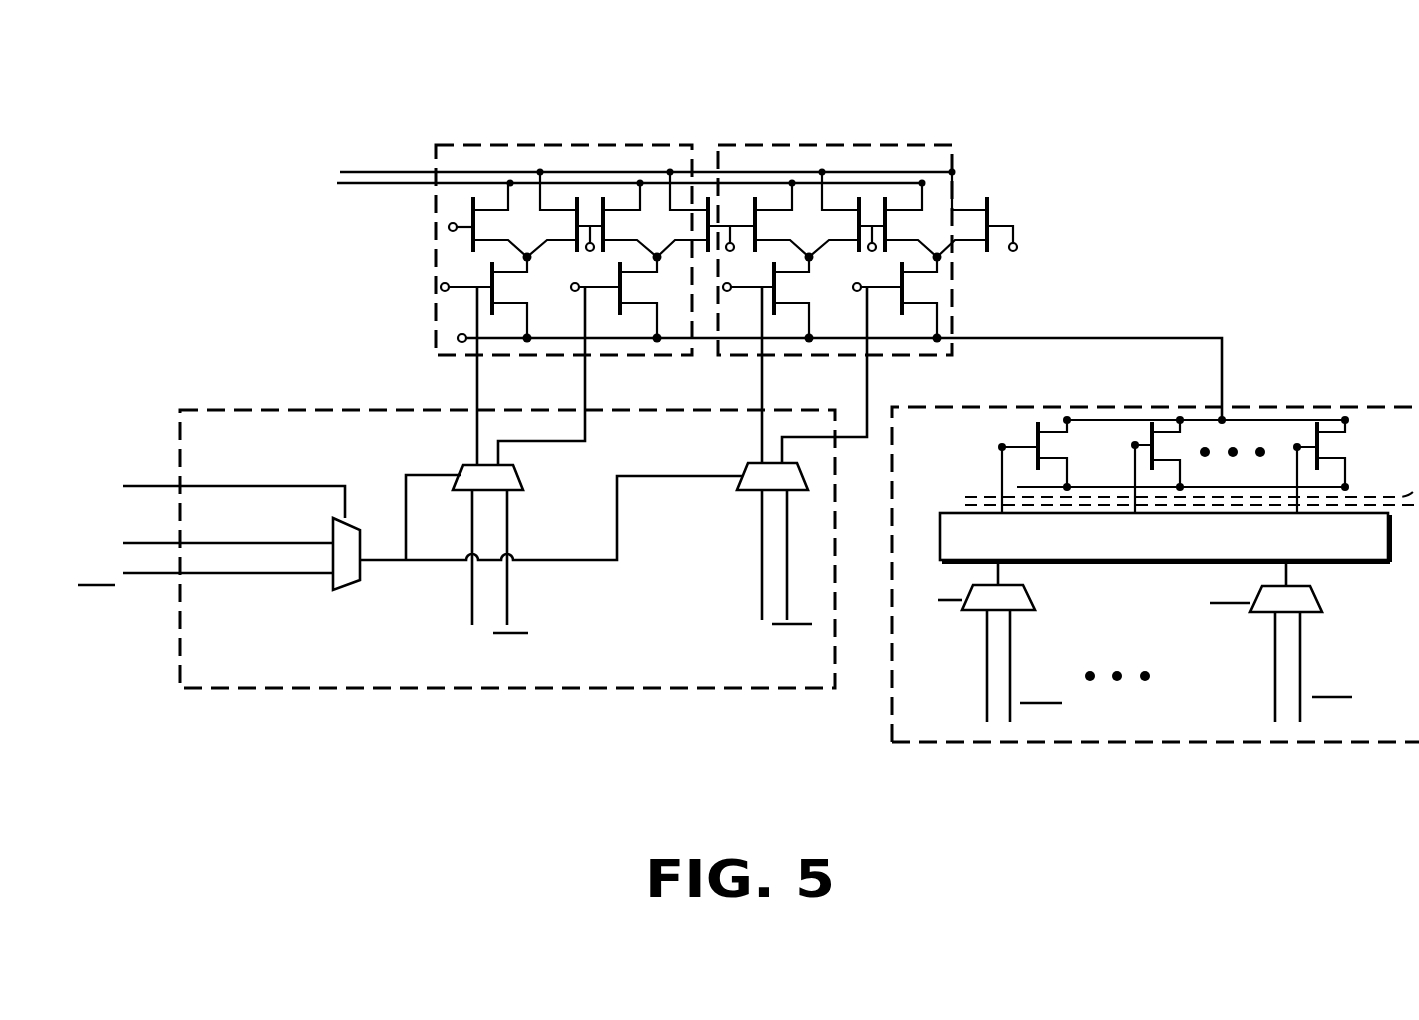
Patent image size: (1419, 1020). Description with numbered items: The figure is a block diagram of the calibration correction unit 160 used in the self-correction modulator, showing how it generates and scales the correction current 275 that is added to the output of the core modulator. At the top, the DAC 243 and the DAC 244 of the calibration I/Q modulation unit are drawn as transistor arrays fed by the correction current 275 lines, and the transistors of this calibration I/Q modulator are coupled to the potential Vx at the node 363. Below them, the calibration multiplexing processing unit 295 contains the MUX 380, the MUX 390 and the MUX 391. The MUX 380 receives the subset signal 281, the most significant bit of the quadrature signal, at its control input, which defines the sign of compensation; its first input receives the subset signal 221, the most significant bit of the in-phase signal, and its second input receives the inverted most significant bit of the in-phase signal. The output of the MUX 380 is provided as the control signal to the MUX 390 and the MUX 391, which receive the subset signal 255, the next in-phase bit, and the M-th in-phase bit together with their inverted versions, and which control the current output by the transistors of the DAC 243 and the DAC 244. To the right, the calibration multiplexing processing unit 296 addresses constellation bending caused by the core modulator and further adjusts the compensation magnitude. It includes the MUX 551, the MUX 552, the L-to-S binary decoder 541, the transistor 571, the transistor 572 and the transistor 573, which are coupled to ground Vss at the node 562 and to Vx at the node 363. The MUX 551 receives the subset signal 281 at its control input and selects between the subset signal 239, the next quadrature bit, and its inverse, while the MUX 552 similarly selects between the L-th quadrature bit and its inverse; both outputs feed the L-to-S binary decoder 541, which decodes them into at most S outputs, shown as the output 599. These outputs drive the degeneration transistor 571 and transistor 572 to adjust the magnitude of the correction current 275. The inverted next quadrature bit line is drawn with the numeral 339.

The calibration correction unit 160 is at (1277, 77).
The correction current 275 is at (342, 172).
The DAC 243 is at (437, 356).
The DAC 244 is at (937, 357).
The node 363 is at (1220, 336).
The calibration multiplexing processing unit 295 is at (703, 690).
The subset signal 281 is at (148, 485).
The subset signal 221 is at (230, 543).
The MUX 380 is at (358, 583).
The MUX 390 is at (463, 466).
The MUX 391 is at (748, 464).
The subset signal 255 is at (470, 612).
The calibration multiplexing processing unit 296 is at (1268, 744).
The output 599 is at (975, 497).
The node 562 is at (1020, 487).
The transistor 571 is at (1046, 430).
The transistor 572 is at (1160, 430).
The transistor 573 is at (1331, 430).
The L-to-S binary decoder 541 is at (1165, 537).
The MUX 551 is at (1035, 598).
The MUX 552 is at (1322, 600).
The inverted Q 1 output line 339 is at (1012, 625).
The subset signal 239 is at (985, 705).